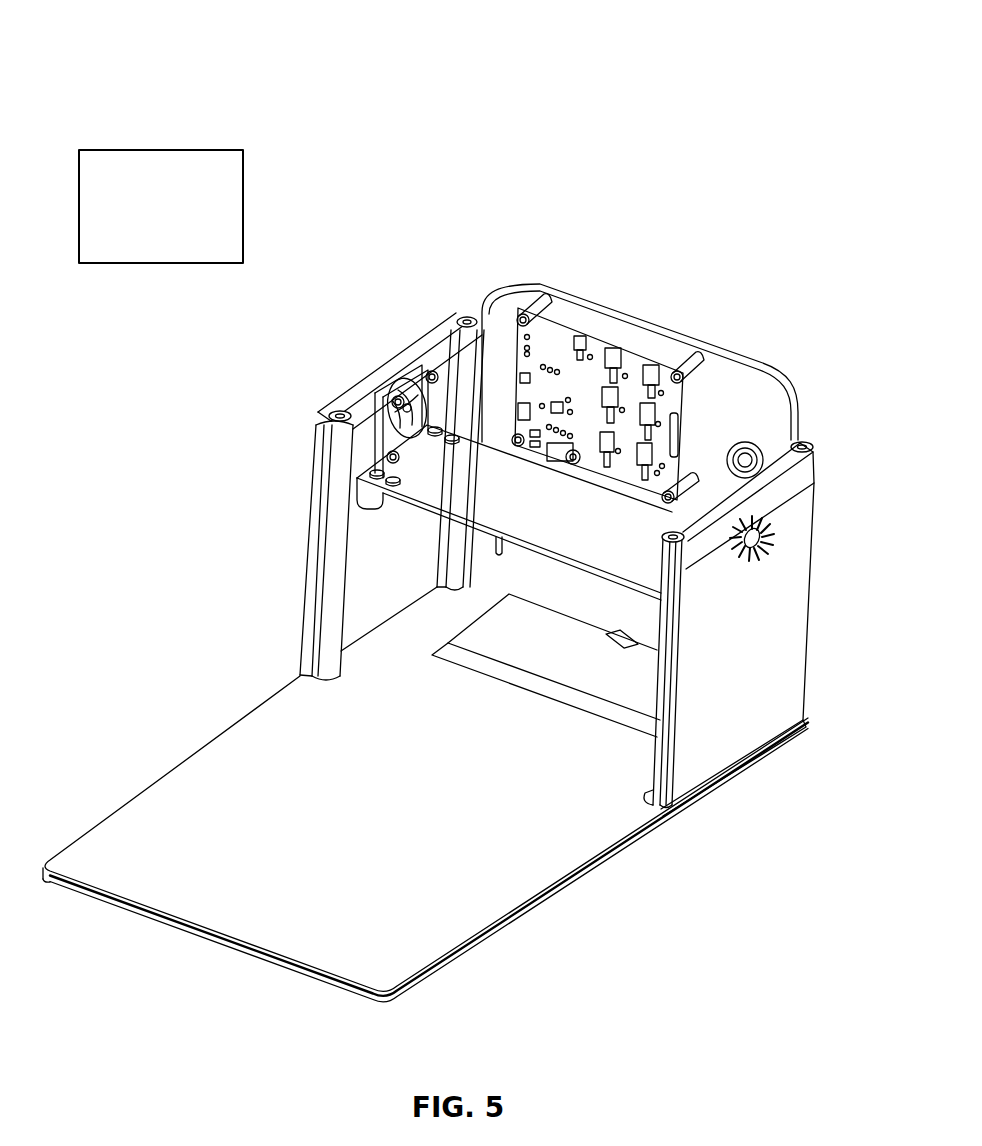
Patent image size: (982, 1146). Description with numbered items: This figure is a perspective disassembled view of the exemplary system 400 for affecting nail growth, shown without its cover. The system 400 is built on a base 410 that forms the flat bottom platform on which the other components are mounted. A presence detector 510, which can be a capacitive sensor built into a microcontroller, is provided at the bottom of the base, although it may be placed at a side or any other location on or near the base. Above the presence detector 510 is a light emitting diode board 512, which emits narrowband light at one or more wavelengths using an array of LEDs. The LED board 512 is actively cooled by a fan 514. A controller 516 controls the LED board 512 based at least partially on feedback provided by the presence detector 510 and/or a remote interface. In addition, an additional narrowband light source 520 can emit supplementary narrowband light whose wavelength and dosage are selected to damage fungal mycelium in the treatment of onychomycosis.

The system 400 is at (262, 432).
The base plate 410 is at (545, 910).
The presence detector 510 is at (463, 660).
The LED board 512 is at (707, 477).
The fan 514 is at (408, 362).
The controller 516 is at (657, 360).
The additional narrowband light source 520 is at (157, 143).